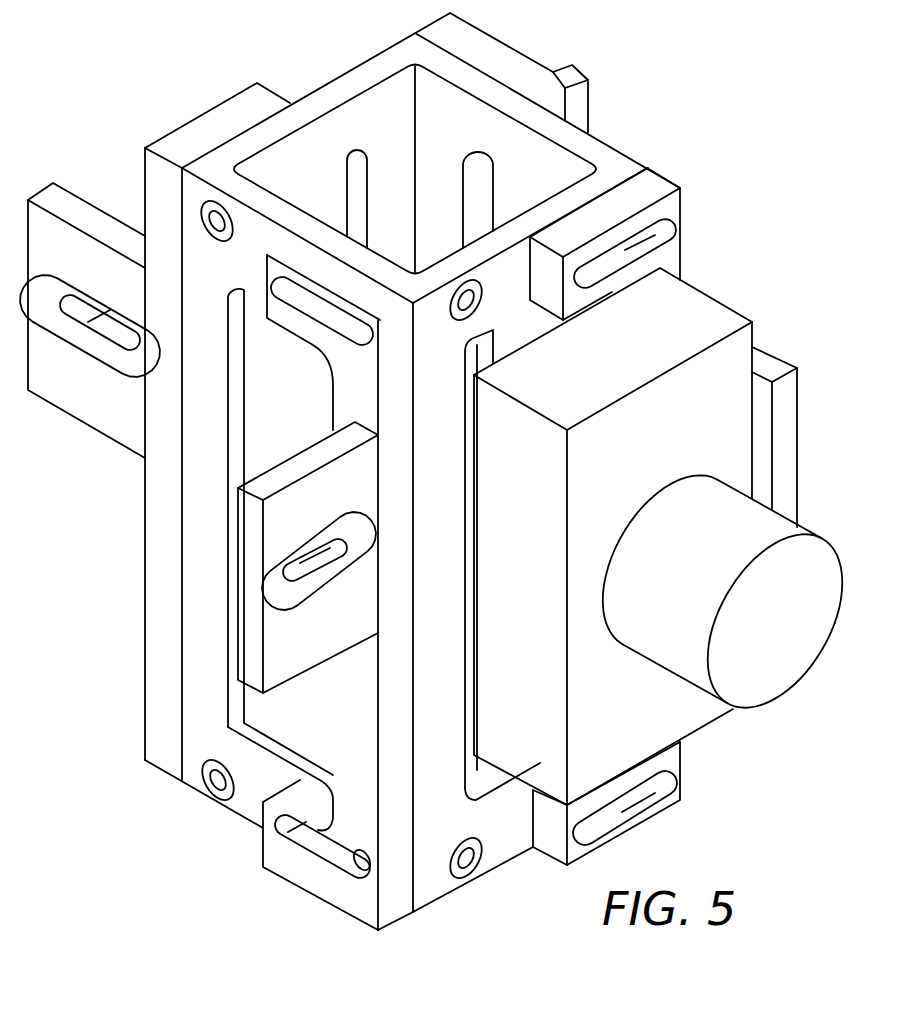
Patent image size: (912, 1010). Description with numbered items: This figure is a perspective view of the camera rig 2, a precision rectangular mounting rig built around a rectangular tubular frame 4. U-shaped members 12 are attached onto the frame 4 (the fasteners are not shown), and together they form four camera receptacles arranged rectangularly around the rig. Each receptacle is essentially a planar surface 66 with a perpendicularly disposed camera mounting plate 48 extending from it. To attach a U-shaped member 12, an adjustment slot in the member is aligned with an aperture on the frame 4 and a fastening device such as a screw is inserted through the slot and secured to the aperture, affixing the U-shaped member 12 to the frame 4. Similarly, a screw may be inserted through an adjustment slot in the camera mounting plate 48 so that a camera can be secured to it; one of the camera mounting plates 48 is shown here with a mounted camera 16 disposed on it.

The camera rig 2 is at (196, 40).
The rectangular tubular frame 4 is at (386, 60).
The U-shaped member 12 is at (262, 94).
The mounted camera 16 is at (698, 303).
The camera mounting plate 48 is at (77, 214).
The planar surface 66 is at (275, 828).